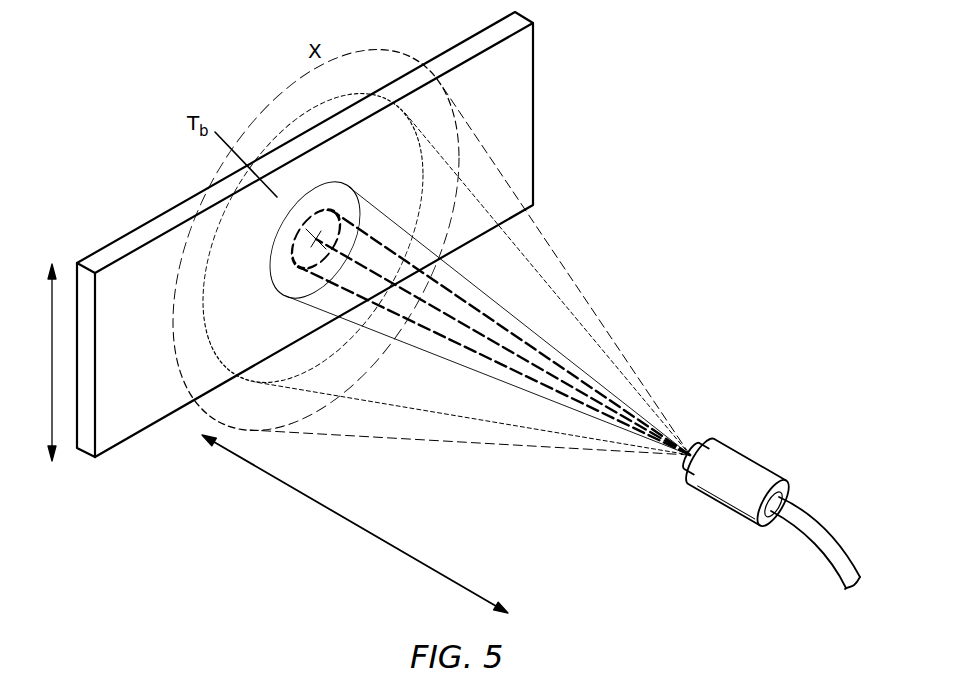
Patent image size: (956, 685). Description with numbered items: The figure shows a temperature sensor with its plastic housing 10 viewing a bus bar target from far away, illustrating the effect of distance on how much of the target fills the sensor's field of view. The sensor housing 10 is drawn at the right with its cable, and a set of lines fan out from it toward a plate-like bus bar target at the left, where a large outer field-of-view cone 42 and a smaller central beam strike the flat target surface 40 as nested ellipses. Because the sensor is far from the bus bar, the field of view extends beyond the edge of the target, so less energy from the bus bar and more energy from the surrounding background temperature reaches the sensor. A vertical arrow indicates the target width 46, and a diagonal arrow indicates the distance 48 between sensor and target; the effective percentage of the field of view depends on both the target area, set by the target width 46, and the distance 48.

The plastic housing 10 is at (757, 463).
The target plate 40 is at (534, 124).
The sensor field of view cone 42 is at (505, 348).
The target width 46 is at (52, 373).
The distance 48 is at (373, 538).